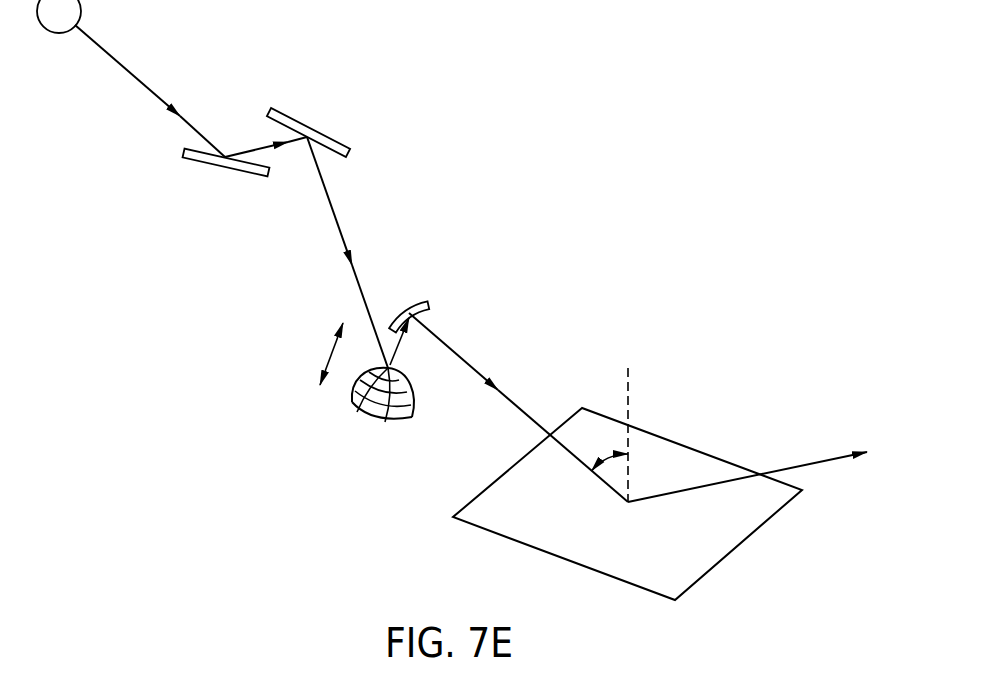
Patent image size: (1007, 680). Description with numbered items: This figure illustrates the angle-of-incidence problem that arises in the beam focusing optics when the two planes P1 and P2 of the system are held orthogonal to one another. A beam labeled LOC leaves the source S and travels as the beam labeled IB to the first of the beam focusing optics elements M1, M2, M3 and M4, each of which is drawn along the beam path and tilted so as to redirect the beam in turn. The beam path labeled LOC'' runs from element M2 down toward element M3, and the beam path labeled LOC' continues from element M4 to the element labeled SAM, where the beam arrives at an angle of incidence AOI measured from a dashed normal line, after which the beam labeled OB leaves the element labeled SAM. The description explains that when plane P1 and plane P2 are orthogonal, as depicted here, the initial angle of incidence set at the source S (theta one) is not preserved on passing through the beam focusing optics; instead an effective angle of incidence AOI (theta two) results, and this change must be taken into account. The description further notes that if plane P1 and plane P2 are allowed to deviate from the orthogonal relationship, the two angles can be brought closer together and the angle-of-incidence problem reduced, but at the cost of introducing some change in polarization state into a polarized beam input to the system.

The source S is at (49, 23).
The light beam LOC is at (203, 83).
The incident beam IB is at (150, 91).
The first mirror M1 is at (205, 172).
The plane P1 is at (294, 168).
The second mirror M2 is at (320, 122).
The reflected light beam from second mirror LOC'' is at (289, 252).
The fourth (curved) mirror M4 is at (406, 294).
The plane P2 is at (363, 351).
The third (hemispherical) mirror M3 is at (361, 430).
The light beam directed to sample LOC' is at (518, 400).
The angle of incidence AOI is at (595, 435).
The output beam OB is at (747, 460).
The sample SAM is at (683, 556).